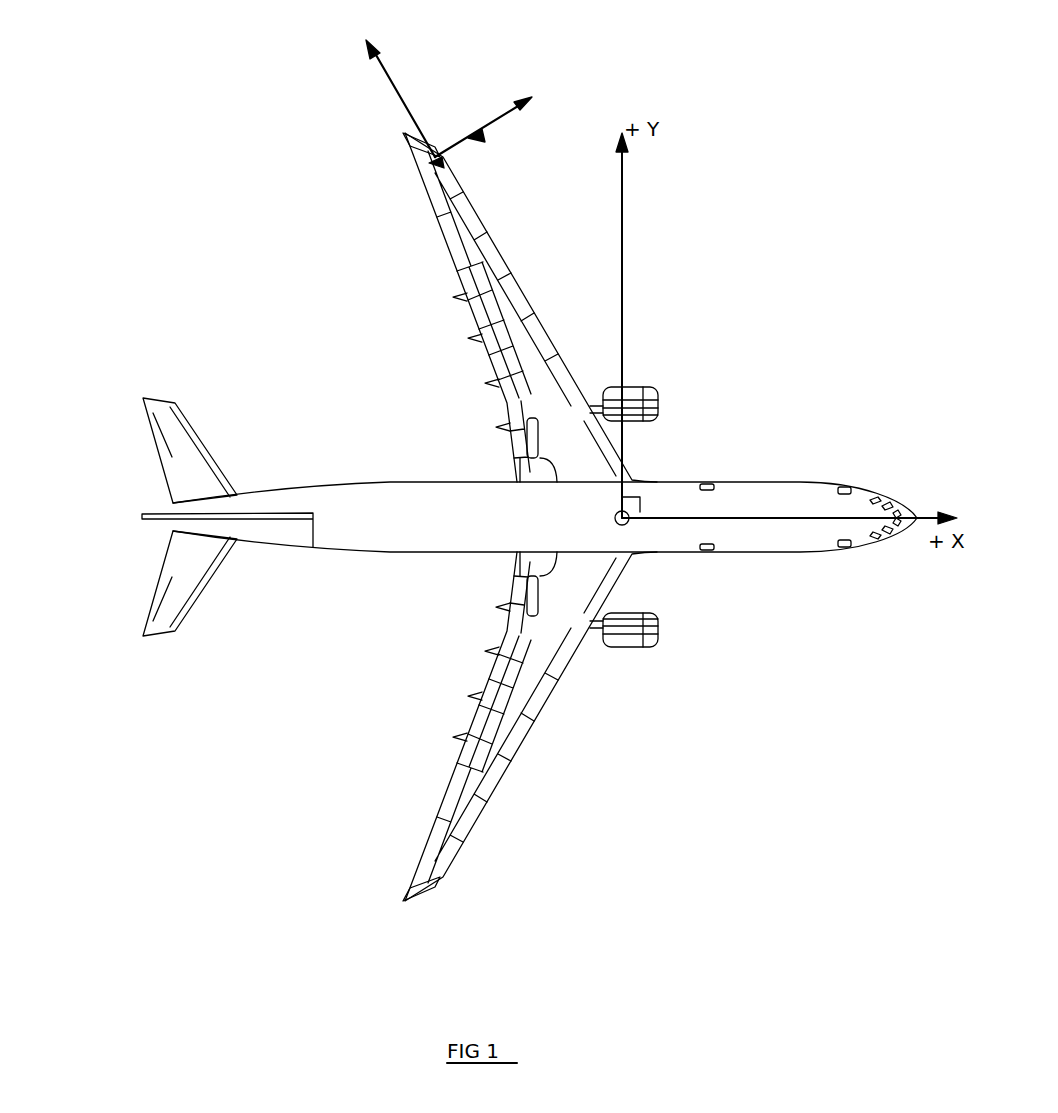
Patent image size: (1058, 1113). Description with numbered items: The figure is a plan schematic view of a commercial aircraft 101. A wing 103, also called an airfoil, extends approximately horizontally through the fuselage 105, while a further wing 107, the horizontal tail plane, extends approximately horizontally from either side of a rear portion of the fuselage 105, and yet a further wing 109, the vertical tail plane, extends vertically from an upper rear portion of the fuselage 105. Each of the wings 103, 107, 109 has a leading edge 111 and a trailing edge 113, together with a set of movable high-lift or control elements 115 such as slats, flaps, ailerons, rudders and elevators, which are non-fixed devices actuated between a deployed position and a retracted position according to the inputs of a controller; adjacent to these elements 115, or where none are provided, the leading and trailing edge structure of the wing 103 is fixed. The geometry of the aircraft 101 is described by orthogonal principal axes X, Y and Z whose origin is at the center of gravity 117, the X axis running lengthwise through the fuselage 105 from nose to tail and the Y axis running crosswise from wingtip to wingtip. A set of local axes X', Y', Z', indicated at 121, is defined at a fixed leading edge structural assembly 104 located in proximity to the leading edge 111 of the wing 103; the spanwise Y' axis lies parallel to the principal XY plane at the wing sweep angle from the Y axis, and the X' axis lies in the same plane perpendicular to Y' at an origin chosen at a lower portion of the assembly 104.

The aircraft 101 is at (272, 257).
The wing 103 is at (553, 372).
The fixed leading edge structural assembly 104 is at (440, 156).
The fuselage 105 is at (727, 522).
The further wing 107 is at (188, 462).
The further wing 109 is at (280, 515).
The leading edge 111 is at (532, 290).
The trailing edge 113 is at (477, 318).
The movable high-lift or control elements 115 is at (513, 267).
The center of gravity 117 is at (665, 514).
The wing coordinate system 121 is at (398, 100).